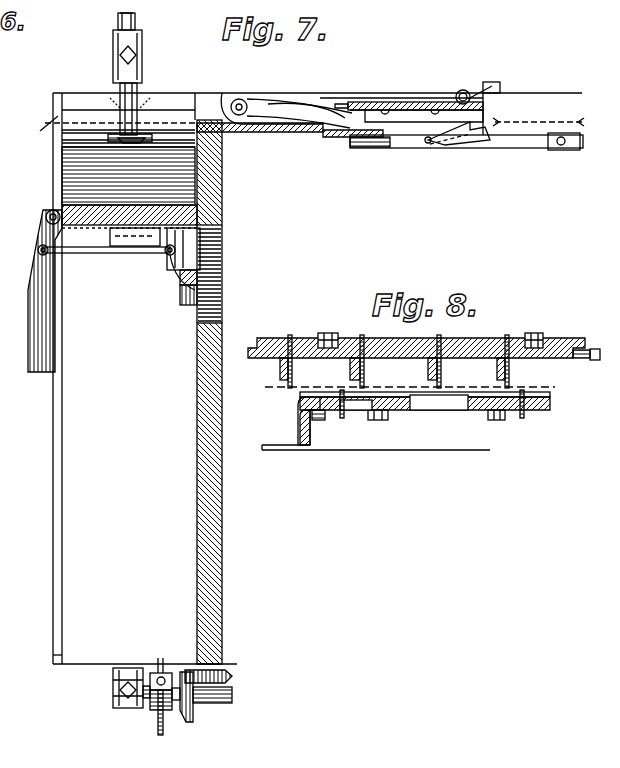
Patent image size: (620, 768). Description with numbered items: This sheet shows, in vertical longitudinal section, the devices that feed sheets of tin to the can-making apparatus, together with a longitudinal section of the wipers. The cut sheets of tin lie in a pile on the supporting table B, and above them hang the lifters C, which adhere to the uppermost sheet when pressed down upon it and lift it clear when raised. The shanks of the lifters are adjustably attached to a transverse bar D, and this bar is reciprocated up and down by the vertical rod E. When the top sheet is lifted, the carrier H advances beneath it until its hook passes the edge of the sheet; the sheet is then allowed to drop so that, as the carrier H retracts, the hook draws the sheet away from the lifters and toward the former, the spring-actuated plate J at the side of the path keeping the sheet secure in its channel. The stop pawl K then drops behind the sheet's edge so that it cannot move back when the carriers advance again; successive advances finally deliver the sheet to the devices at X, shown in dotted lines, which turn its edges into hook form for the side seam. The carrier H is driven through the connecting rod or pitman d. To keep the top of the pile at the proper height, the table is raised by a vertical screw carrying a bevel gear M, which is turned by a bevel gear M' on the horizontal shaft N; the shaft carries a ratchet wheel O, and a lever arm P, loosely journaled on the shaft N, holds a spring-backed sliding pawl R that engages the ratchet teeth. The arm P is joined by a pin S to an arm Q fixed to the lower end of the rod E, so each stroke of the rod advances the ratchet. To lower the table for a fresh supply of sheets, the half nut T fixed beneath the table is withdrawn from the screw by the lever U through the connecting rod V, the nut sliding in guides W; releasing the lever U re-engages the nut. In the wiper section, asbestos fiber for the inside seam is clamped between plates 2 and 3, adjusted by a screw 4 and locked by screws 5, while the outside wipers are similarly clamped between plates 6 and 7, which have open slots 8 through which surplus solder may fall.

In FIG. 7, the supporting table B is at (72, 205).
In FIG. 7, the lifters C is at (142, 134).
In FIG. 7, the transverse bar D is at (134, 68).
In FIG. 7, the carrier H is at (233, 96).
In FIG. 7, the stop pawl K is at (308, 102).
In FIG. 7, the spring-actuated plate J is at (408, 100).
In FIG. 7, the edge-turning devices X is at (538, 109).
In FIG. 7, the connecting rod or pitman d is at (580, 146).
In FIG. 7, the guides W is at (112, 238).
In FIG. 7, the connecting rod V is at (97, 254).
In FIG. 7, the lever U is at (30, 328).
In FIG. 7, the half nut T is at (208, 266).
In FIG. 7, the vertical rod E is at (71, 668).
In FIG. 7, the sliding pawl R is at (156, 664).
In FIG. 7, the lever arm P is at (170, 673).
In FIG. 7, the pin S is at (113, 694).
In FIG. 7, the arm Q is at (123, 702).
In FIG. 7, the ratchet wheel O is at (158, 730).
In FIG. 7, the bevel gear M' is at (191, 710).
In FIG. 7, the horizontal shaft N is at (215, 704).
In FIG. 7, the bevel gear M is at (225, 675).
In FIG. 8, the plate 2 is at (480, 344).
In FIG. 8, the plate 3 is at (478, 352).
In FIG. 8, the screw 4 is at (600, 355).
In FIG. 8, the screws 5 is at (336, 328).
In FIG. 8, the plate 6 is at (408, 396).
In FIG. 8, the plate 7 is at (395, 412).
In FIG. 8, the open slots 8 is at (450, 410).